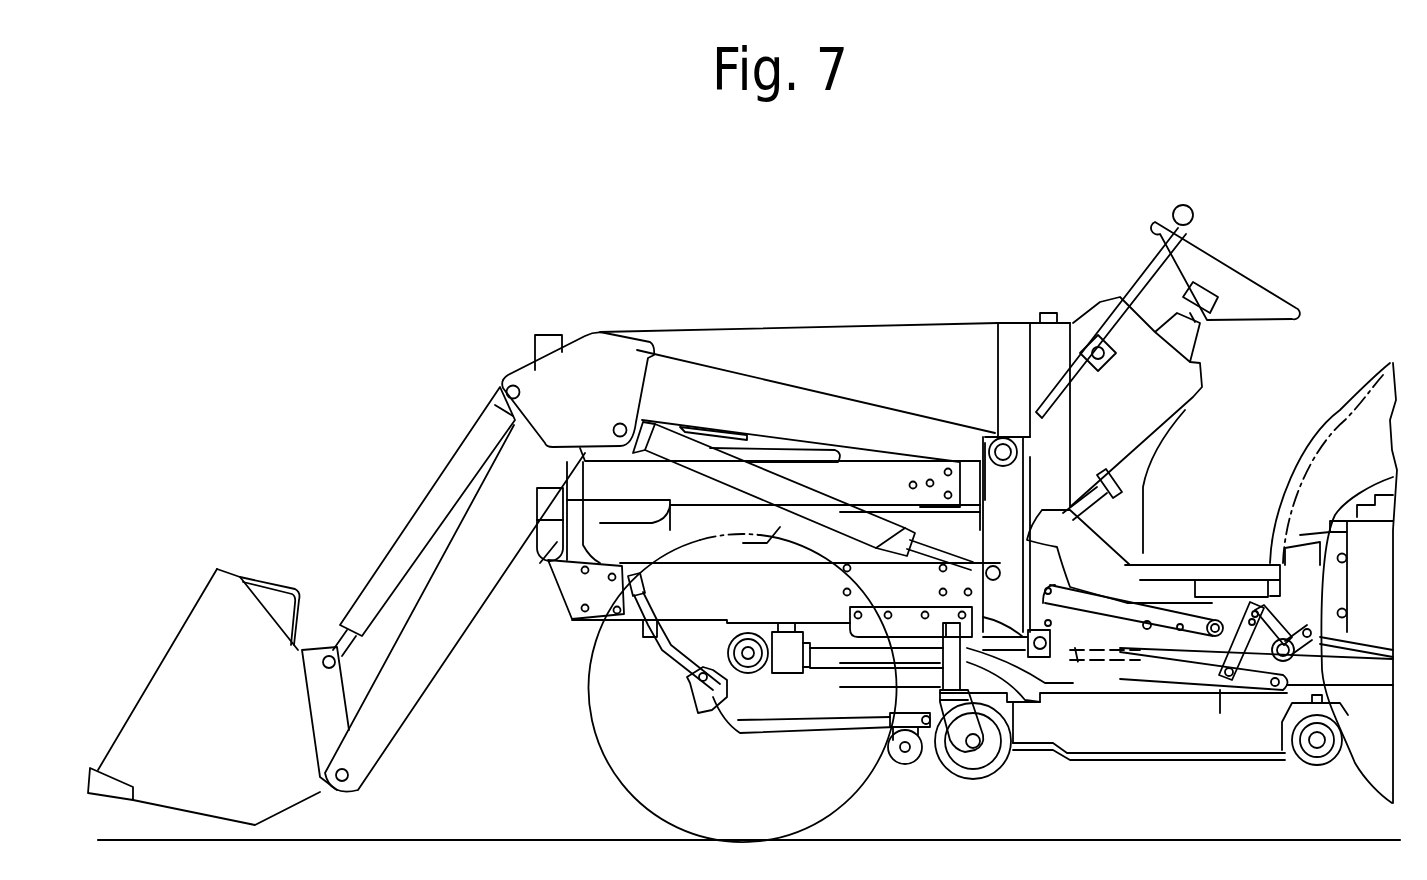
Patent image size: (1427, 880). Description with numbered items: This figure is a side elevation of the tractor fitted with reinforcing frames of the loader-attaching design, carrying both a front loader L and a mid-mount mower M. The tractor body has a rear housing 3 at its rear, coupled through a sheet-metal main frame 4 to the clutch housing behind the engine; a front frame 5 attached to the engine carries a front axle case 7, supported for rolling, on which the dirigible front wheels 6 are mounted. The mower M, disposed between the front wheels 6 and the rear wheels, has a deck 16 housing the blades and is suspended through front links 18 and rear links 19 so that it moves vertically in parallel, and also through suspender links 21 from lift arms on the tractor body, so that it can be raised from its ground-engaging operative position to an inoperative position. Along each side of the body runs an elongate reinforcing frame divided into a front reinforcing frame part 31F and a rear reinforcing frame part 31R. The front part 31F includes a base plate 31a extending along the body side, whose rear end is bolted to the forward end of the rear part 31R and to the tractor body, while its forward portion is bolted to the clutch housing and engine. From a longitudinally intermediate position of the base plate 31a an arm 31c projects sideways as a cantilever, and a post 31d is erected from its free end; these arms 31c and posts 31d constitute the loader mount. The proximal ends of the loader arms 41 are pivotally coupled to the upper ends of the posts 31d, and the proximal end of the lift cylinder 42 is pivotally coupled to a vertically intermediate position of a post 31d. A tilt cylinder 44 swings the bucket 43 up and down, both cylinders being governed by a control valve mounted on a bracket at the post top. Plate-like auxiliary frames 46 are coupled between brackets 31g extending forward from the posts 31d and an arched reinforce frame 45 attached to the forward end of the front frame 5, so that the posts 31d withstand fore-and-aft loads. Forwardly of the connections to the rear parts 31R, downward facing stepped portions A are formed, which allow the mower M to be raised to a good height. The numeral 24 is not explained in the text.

The rear housing 3 is at (1373, 535).
The main frame 4 is at (1218, 565).
The front frame 5 is at (677, 613).
The front wheels 6 is at (605, 757).
The front axle case 7 is at (745, 690).
The deck 16 is at (1200, 762).
The front links 18 is at (777, 732).
The rear links 19 is at (1167, 665).
The suspender links 21 is at (1255, 685).
The lower link arm 24 is at (1103, 680).
The base plates 31a is at (838, 660).
The arms 31c is at (987, 620).
The posts 31d is at (1012, 432).
The front reinforcing frame parts 31F is at (1040, 420).
The brackets 31g is at (970, 473).
The rear reinforcing frame parts 31R is at (1367, 677).
The arms 41 is at (740, 380).
The lift cylinder 42 is at (740, 483).
The bucket 43 is at (180, 648).
The tilt cylinder 44 is at (418, 518).
The arched reinforce frame 45 is at (558, 547).
The auxiliary frames 46 is at (866, 470).
The stepped portions A is at (1093, 660).
The front loader L is at (228, 480).
The mid-mount mower M is at (1105, 776).